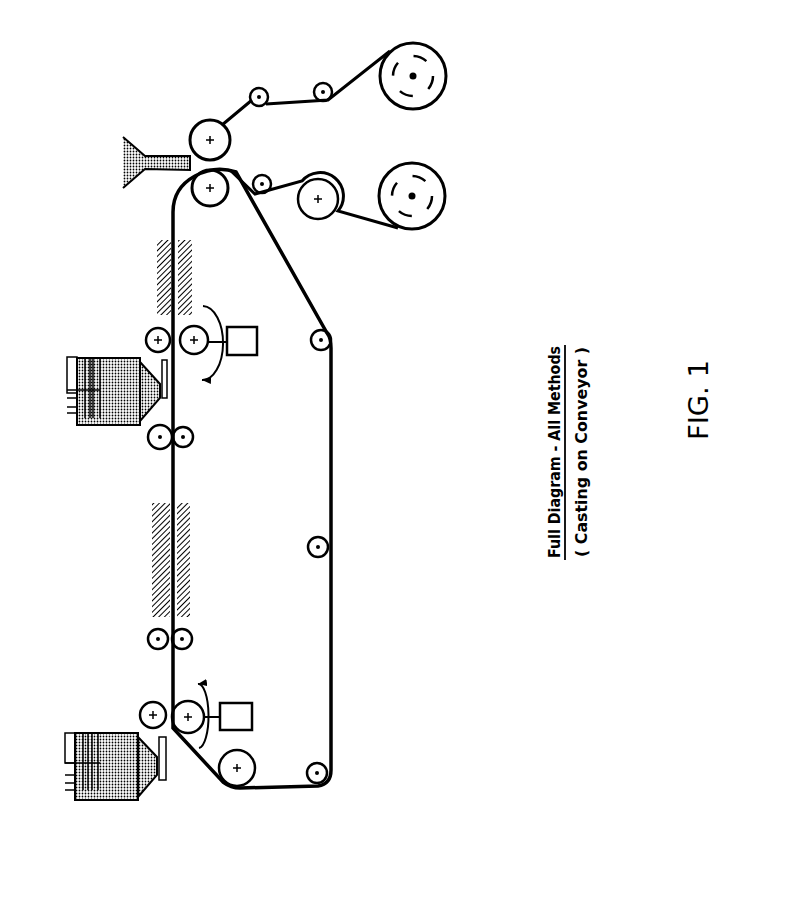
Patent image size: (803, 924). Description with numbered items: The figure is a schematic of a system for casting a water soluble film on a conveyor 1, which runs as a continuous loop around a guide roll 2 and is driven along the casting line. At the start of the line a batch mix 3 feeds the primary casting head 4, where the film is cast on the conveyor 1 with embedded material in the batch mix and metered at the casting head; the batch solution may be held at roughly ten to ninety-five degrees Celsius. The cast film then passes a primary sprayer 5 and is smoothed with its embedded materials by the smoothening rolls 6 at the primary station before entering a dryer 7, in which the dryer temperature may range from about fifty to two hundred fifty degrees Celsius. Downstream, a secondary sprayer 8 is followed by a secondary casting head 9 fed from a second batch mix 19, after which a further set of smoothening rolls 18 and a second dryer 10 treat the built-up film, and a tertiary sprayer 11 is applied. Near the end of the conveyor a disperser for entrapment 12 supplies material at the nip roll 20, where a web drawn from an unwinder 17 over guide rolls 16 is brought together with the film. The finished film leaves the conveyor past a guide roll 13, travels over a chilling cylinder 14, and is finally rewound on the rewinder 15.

The conveyor 1 is at (336, 668).
The guide roll 2 is at (338, 548).
The batch mix 3 is at (115, 788).
The primary casting head 4 is at (188, 716).
The primary sprayer 5 is at (180, 663).
The smoothening rolls 6 is at (196, 629).
The dryer 7 is at (198, 510).
The secondary sprayer 8 is at (181, 473).
The secondary casting head 9 is at (259, 342).
The dryer 10 is at (199, 263).
The tertiary sprayer 11 is at (142, 213).
The disperser for entrapment 12 is at (135, 130).
The guide roll 13 is at (266, 208).
The chilling cylinder 14 is at (340, 228).
The rewinder 15 is at (451, 193).
The guide rolls 16 is at (261, 70).
The unwinder 17 is at (454, 70).
The smoothening rolls 18 is at (183, 437).
The batch mix 19 is at (117, 374).
The nip roll 20 is at (210, 147).